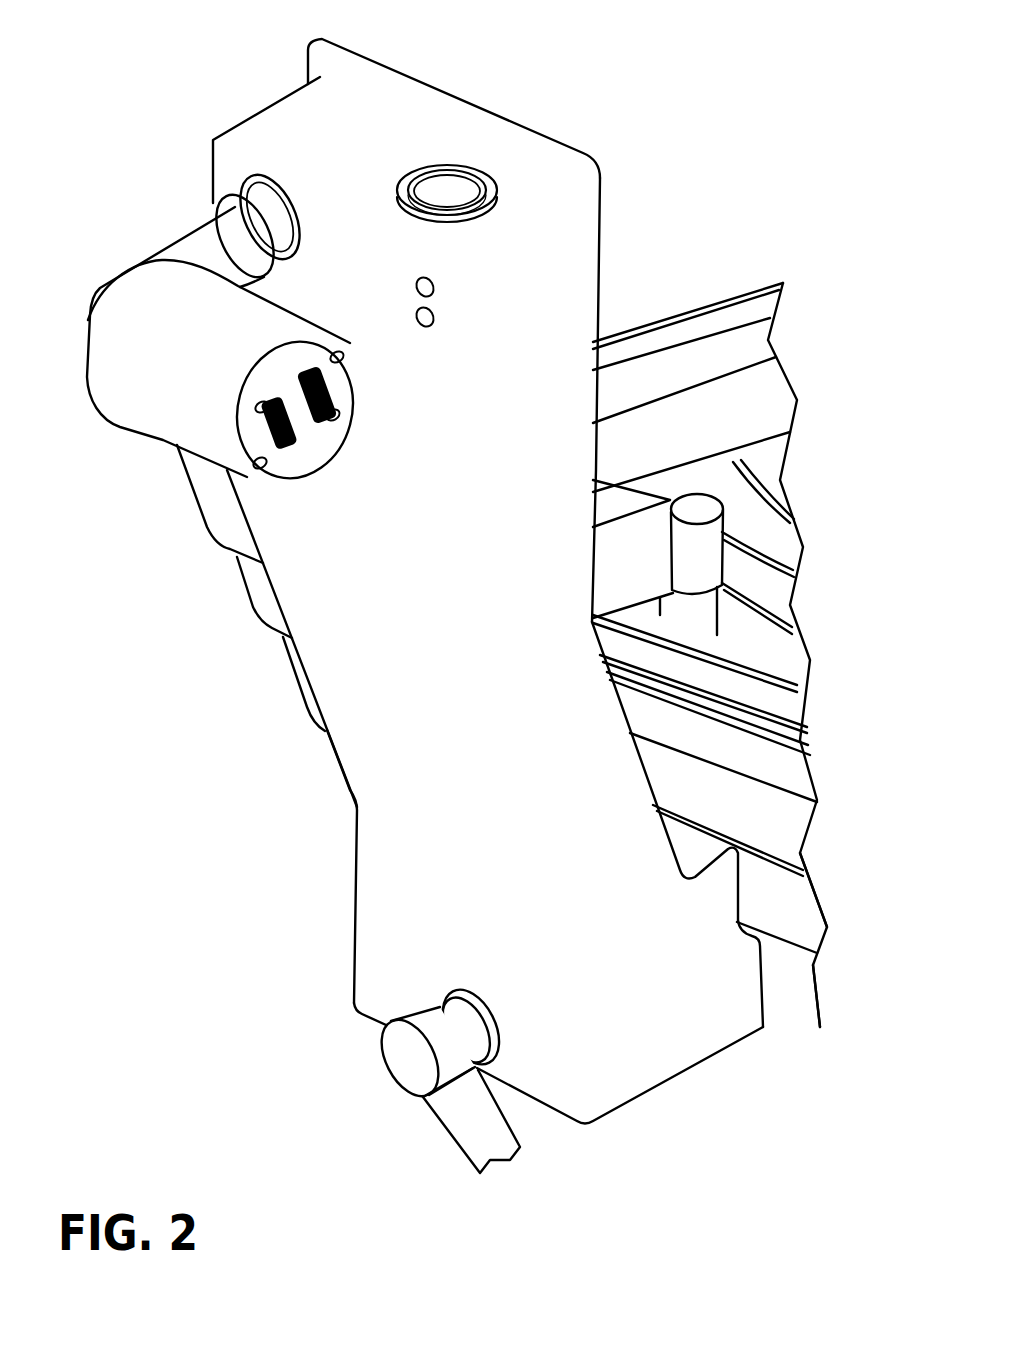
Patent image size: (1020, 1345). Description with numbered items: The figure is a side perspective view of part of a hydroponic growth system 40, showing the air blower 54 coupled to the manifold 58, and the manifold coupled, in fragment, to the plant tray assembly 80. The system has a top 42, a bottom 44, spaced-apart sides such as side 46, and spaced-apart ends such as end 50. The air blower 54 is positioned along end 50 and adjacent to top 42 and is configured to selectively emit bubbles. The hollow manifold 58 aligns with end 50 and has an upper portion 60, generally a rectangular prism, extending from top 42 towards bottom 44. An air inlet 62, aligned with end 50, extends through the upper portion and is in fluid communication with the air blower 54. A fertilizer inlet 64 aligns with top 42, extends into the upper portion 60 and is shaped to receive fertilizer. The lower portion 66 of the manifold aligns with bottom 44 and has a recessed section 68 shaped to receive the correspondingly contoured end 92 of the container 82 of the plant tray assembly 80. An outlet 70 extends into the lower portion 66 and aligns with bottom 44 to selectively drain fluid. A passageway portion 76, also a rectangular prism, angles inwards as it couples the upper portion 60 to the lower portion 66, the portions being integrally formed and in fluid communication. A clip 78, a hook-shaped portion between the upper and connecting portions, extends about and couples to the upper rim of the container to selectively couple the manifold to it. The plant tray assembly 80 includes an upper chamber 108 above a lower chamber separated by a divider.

The hydroponic growth system 40 is at (800, 108).
The top 42 is at (749, 108).
The bottom 44 is at (804, 1068).
The side 46 is at (704, 285).
The end 50 is at (160, 777).
The air blower 54 is at (157, 297).
The manifold 58 is at (605, 120).
The upper portion 60 is at (603, 196).
The air inlet 62 is at (233, 183).
The fertilizer inlet 64 is at (447, 188).
The lower portion 66 is at (653, 1057).
The recessed section 68 is at (765, 987).
The outlet 70 is at (443, 997).
The passageway portion 76 is at (363, 668).
The clip 78 is at (702, 562).
The plant tray assembly 80 is at (808, 245).
The container 82 is at (759, 288).
The end 92 is at (777, 828).
The upper chamber 108 is at (753, 352).